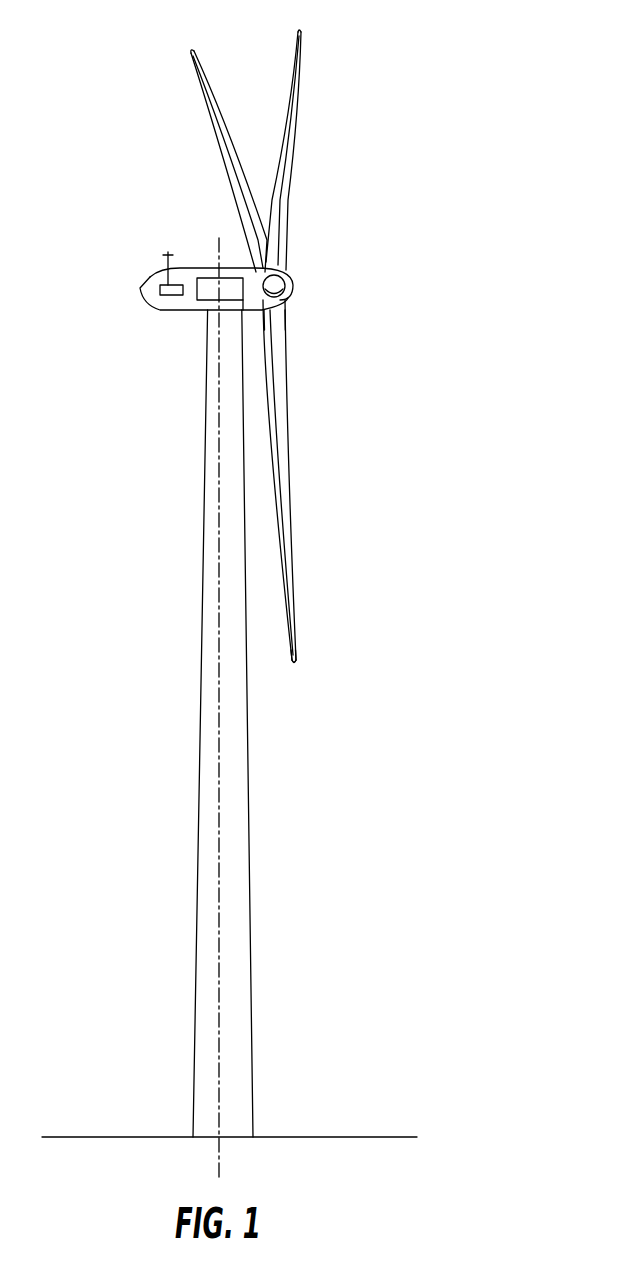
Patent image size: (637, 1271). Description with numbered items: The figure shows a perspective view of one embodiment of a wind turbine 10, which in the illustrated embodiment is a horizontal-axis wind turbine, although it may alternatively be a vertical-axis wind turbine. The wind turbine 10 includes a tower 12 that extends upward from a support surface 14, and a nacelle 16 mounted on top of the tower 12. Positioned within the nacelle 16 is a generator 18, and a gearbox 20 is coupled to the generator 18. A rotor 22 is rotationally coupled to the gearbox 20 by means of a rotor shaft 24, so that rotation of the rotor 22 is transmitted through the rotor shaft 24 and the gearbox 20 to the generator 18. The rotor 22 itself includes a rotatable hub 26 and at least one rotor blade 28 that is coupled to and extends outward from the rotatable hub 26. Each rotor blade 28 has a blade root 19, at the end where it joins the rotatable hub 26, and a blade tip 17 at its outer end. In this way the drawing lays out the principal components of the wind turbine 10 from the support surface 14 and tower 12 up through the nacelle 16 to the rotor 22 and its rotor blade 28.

The wind turbine 10 is at (432, 83).
The tower 12 is at (197, 850).
The support surface 14 is at (118, 1137).
The nacelle 16 is at (162, 311).
The blade tip 17 is at (295, 663).
The generator 18 is at (162, 283).
The blade root 19 is at (287, 323).
The gearbox 20 is at (202, 277).
The rotor 22 is at (303, 259).
The rotor shaft 24 is at (252, 290).
The rotatable hub 26 is at (288, 297).
The rotor blade 28 is at (210, 116).